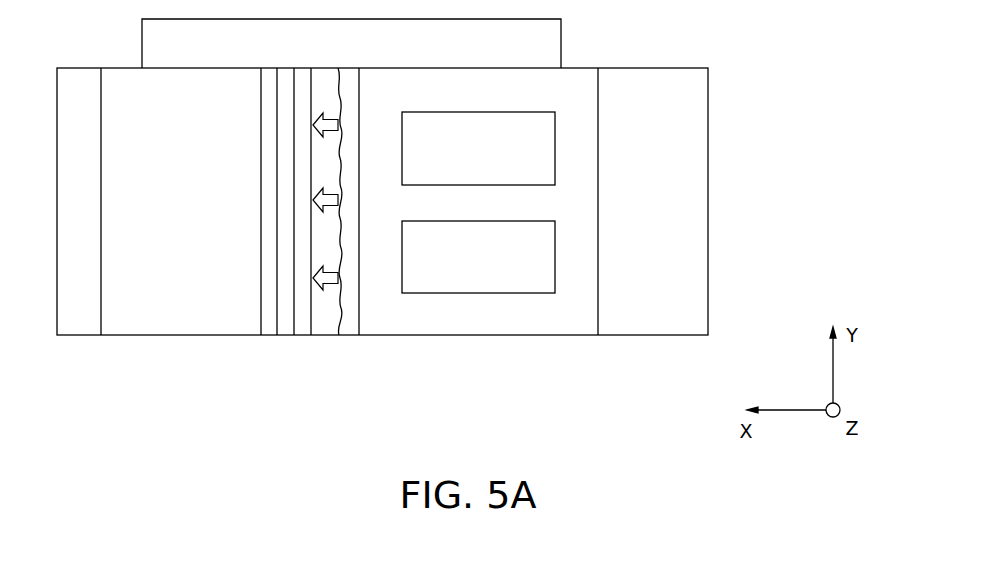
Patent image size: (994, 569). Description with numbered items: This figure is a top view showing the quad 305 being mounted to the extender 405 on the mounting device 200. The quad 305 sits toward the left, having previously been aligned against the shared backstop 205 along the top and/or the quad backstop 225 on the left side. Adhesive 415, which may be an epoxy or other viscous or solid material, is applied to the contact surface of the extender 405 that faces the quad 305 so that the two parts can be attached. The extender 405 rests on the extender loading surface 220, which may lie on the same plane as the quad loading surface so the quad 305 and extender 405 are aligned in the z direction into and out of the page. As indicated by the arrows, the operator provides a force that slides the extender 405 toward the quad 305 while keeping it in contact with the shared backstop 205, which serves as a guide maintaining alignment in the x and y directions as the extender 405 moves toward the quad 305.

The mounting device 200 is at (708, 160).
The shared backstop 205 is at (337, 54).
The extender loading surface 220 is at (635, 268).
The quad backstop 225 is at (153, 291).
The quad 305 is at (275, 335).
The extender 405 is at (526, 102).
The adhesive 415 is at (350, 327).